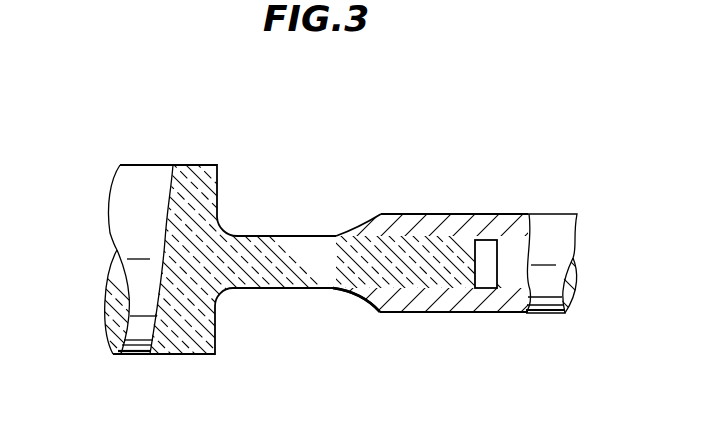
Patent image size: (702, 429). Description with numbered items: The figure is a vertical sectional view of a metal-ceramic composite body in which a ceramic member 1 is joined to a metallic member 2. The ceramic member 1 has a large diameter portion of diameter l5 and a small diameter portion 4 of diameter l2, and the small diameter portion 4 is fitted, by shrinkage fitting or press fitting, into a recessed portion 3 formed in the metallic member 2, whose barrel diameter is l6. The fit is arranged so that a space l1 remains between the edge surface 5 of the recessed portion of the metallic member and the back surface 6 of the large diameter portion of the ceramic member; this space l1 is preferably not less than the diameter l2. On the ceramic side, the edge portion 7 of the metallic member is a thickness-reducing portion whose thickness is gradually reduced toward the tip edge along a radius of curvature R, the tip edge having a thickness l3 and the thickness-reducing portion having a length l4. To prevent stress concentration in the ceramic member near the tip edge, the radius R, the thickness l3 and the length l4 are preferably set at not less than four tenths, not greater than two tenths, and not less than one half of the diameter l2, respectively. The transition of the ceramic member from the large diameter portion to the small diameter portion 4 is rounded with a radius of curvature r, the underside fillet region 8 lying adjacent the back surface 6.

The ceramic member 1 is at (146, 178).
The metallic member 2 is at (559, 227).
The recessed portion 3 is at (486, 250).
The small diameter portion 4 is at (426, 235).
The edge surface of the recessed portion 5 is at (334, 291).
The back surface of the large diameter portion 6 is at (221, 342).
The edge portion (thickness-reducing portion) 7 is at (366, 306).
The fillet under head 8 is at (232, 292).
The radius of curvature of the thickness-reducing portion of the ceramic member r is at (225, 232).
The radius of curvature of the thickness-reducing portion R is at (351, 300).
The space l1 is at (336, 236).
The diameter of the small diameter portion l2 is at (282, 288).
The thickness of the tip edge of the thickness-reducing portion l3 is at (313, 236).
The length of the thickness-reducing portion l4 is at (381, 213).
The diameter of the large diameter portion l5 is at (120, 165).
The barrel diameter l6 is at (577, 214).